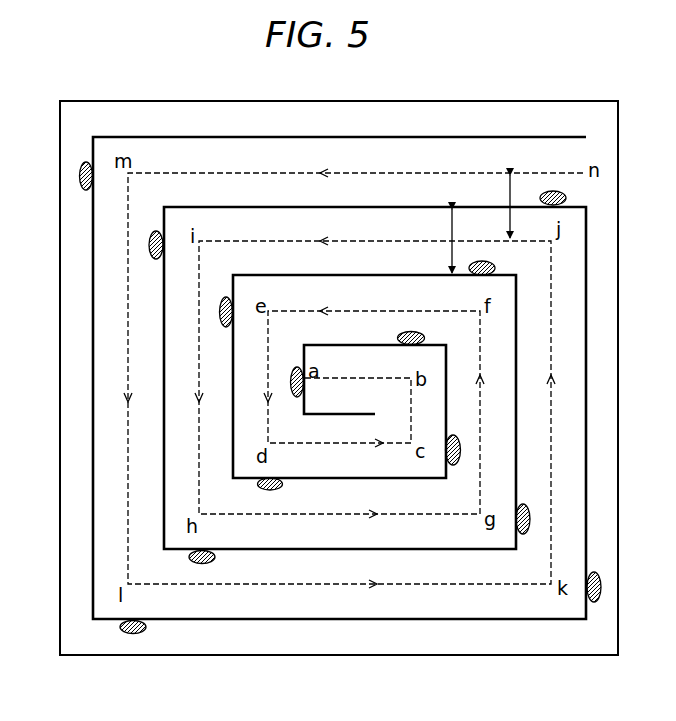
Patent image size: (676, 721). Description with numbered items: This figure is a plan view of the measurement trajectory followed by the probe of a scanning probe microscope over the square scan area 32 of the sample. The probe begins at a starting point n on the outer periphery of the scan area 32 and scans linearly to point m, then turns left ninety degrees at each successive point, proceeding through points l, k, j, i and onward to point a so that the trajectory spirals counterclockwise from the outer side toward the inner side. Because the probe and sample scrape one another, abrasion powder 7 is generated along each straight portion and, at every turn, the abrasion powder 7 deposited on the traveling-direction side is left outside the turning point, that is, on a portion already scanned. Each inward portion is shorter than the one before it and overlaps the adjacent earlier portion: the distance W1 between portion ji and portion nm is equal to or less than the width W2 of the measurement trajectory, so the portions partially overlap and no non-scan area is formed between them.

The abrasion powder 7 is at (553, 190).
The scan area 32 is at (60, 267).
The distance between adjacent measurement trajectory portions W1 is at (498, 206).
The width of the measurement trajectory W2 is at (440, 241).